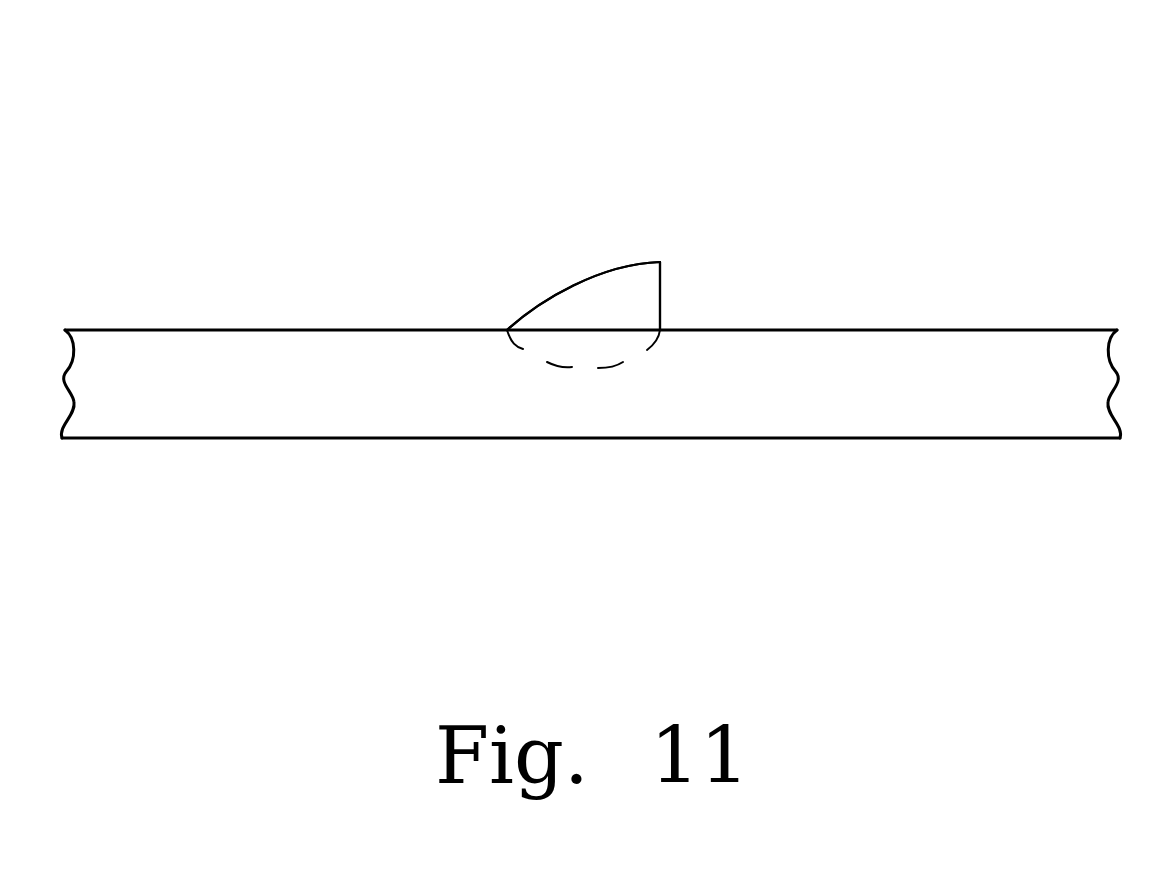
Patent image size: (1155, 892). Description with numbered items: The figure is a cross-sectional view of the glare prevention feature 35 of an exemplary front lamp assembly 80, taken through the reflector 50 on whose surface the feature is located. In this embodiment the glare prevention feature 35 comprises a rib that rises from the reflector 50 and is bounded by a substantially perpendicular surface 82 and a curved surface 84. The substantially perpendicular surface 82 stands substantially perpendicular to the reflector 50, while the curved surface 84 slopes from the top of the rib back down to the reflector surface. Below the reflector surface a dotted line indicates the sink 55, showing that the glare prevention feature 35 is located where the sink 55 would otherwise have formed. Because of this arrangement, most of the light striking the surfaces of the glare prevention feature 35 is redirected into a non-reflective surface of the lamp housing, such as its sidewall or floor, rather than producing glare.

The front lamp assembly 80 is at (833, 152).
The glare prevention feature 35 is at (632, 295).
The curved surface 84 is at (542, 296).
The substantially perpendicular surface 82 is at (663, 307).
The sink 55 is at (607, 369).
The reflector 50 is at (883, 397).